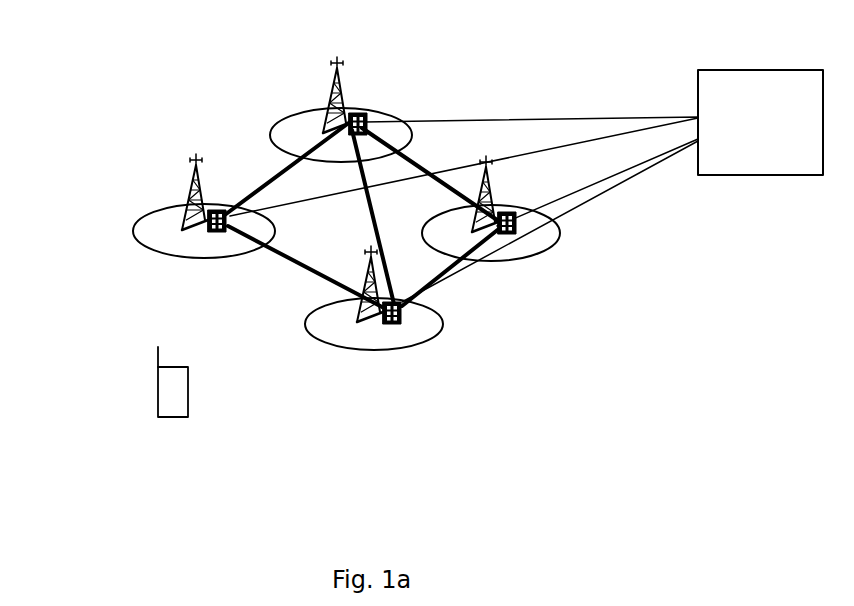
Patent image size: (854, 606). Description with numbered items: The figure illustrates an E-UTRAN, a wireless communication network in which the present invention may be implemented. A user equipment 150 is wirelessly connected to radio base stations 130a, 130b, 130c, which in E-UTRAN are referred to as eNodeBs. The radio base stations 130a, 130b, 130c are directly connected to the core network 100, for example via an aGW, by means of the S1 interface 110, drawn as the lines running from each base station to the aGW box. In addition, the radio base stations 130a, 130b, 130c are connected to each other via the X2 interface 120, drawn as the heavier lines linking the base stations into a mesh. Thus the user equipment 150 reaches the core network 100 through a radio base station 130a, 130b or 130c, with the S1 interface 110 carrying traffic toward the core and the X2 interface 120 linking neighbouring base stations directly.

The core network 100 is at (760, 122).
The S1 interface 110 is at (473, 108).
The X2 interface 120 is at (268, 178).
The radio base station 130a is at (181, 173).
The radio base station 130b is at (440, 298).
The radio base station 130c is at (620, 228).
The user equipment 150 is at (148, 407).